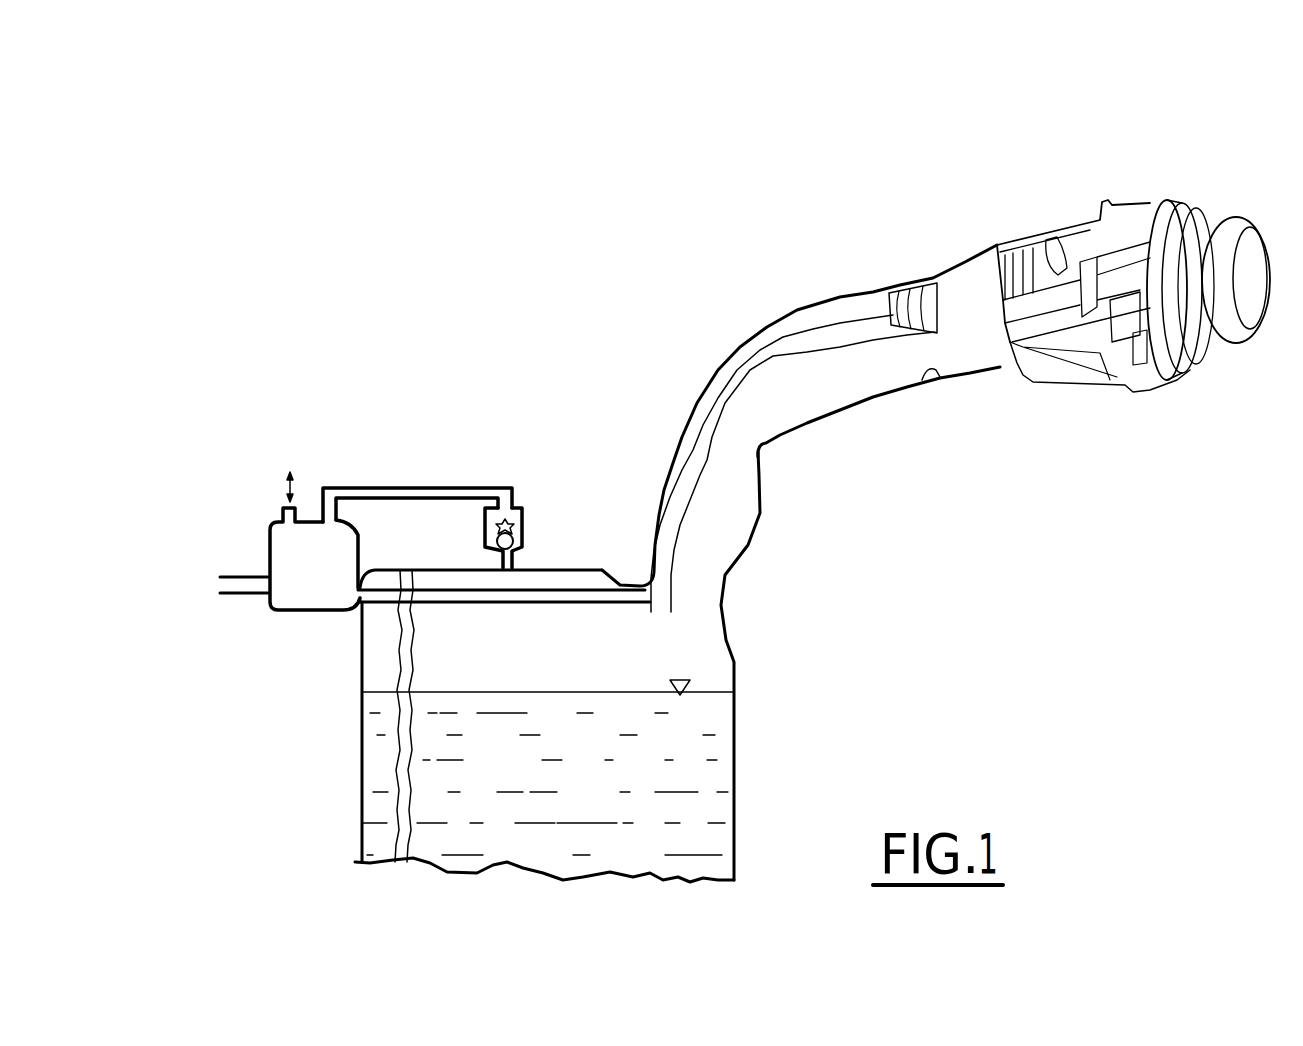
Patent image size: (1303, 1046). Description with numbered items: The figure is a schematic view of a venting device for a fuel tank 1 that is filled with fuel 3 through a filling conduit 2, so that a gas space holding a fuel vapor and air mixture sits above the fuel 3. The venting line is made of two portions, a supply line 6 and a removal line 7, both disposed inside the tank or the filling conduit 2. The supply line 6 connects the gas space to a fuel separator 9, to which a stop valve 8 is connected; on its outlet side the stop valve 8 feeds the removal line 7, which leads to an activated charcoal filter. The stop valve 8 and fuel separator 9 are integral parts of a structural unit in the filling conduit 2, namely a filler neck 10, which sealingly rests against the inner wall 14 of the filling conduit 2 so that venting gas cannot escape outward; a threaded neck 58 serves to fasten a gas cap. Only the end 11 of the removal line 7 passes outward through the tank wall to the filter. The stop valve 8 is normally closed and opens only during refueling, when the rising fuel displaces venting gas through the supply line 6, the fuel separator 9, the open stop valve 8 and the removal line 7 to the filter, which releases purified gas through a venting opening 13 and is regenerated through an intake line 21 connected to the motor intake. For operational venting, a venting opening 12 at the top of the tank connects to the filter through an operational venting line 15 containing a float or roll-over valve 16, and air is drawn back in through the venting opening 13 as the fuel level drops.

The fuel tank 1 is at (748, 660).
The filling conduit 2 is at (782, 415).
The fuel 3 is at (690, 783).
The supply line 6 is at (885, 308).
The removal line 7 is at (690, 432).
The stop valve 8 is at (1066, 236).
The fuel separator 9 is at (1120, 285).
The filler neck 10 is at (1085, 360).
The end of the removal line 11 is at (340, 600).
The venting opening 12 is at (503, 562).
The venting opening 13 is at (283, 517).
The inner wall 14 is at (945, 375).
The operational venting line 15 is at (400, 493).
The roll-over valve 16 is at (525, 507).
The intake line 21 is at (245, 585).
The threaded neck 58 is at (1233, 340).